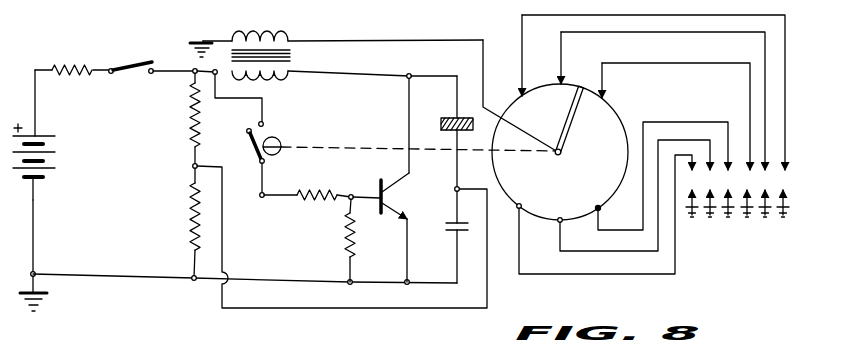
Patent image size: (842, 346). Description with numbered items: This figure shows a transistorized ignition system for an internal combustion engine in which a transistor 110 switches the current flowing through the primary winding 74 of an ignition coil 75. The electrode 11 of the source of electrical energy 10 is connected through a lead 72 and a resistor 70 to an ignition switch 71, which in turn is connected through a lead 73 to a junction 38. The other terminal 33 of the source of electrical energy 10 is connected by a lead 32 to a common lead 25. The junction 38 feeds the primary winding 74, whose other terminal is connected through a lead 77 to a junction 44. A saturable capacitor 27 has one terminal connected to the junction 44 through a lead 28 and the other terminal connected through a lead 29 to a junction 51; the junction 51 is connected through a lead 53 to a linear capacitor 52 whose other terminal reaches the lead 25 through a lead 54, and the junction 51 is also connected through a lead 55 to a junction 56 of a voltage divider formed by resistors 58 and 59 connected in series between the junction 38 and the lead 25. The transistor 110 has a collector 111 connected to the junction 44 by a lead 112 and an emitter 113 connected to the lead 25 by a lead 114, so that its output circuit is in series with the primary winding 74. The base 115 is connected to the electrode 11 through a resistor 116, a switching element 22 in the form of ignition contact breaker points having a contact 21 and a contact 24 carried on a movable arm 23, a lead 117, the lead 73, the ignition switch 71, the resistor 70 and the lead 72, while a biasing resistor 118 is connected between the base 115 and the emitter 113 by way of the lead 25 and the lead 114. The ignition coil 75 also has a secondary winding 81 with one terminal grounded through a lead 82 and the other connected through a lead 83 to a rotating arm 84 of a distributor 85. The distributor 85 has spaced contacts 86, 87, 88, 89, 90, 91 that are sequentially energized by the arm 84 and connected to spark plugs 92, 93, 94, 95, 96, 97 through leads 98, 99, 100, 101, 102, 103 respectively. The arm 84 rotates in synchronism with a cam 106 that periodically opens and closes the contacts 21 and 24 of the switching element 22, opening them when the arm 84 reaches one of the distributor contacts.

The source of electrical energy 10 is at (53, 160).
The electrode 11 is at (37, 136).
The contact 21 is at (263, 125).
The switching element 22 is at (281, 137).
The movable arm 23 is at (257, 149).
The contact 24 is at (247, 129).
The lead 25 is at (100, 277).
The saturable capacitor 27 is at (452, 118).
The lead 28 is at (444, 77).
The lead 29 is at (456, 180).
The lead 32 is at (36, 245).
The terminal 33 is at (37, 182).
The junction 38 is at (194, 68).
The junction 44 is at (410, 74).
The junction 51 is at (458, 188).
The linear capacitor 52 is at (447, 227).
The lead 53 is at (456, 210).
The lead 54 is at (456, 262).
The lead 55 is at (262, 309).
The junction 56 is at (192, 166).
The resistor 58 is at (189, 118).
The resistor 59 is at (189, 228).
The resistor 70 is at (75, 62).
The ignition switch 71 is at (131, 63).
The lead 72 is at (45, 68).
The lead 73 is at (168, 75).
The primary winding 74 is at (264, 76).
The ignition coil 75 is at (289, 33).
The lead 77 is at (336, 74).
The secondary winding 81 is at (251, 40).
The lead 82 is at (205, 40).
The lead 83 is at (386, 40).
The rotating arm 84 is at (571, 125).
The distributor 85 is at (510, 203).
The contact 86 is at (524, 93).
The contact 87 is at (563, 83).
The contact 88 is at (604, 98).
The contact 89 is at (598, 207).
The contact 90 is at (561, 218).
The contact 91 is at (521, 206).
The spark plug 92 is at (783, 182).
The spark plug 93 is at (760, 182).
The spark plug 94 is at (742, 182).
The spark plug 95 is at (724, 182).
The spark plug 96 is at (703, 182).
The spark plug 97 is at (688, 182).
The lead 98 is at (787, 70).
The lead 99 is at (705, 32).
The lead 100 is at (647, 64).
The lead 101 is at (667, 123).
The lead 102 is at (673, 141).
The lead 103 is at (675, 207).
The cam 106 is at (274, 151).
The transistor 110 is at (377, 187).
The collector 111 is at (403, 162).
The lead 112 is at (406, 112).
The emitter 113 is at (394, 221).
The lead 114 is at (405, 266).
The base 115 is at (361, 207).
The resistor 116 is at (322, 191).
The lead 117 is at (215, 97).
The biasing resistor 118 is at (347, 246).